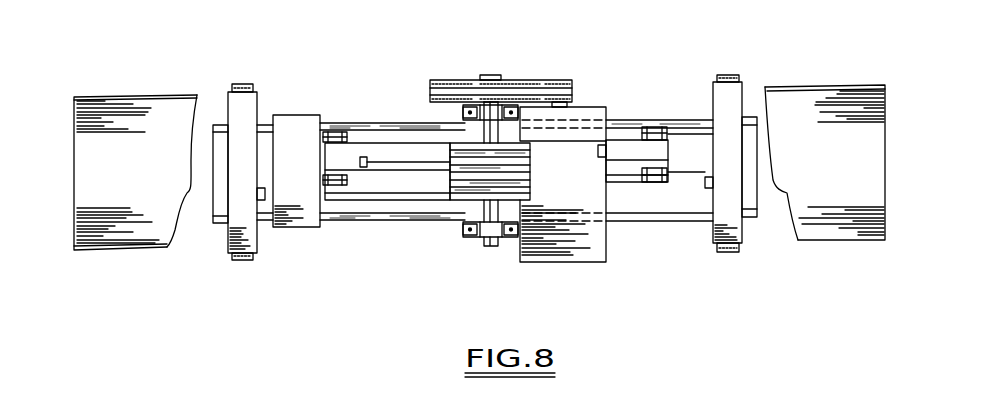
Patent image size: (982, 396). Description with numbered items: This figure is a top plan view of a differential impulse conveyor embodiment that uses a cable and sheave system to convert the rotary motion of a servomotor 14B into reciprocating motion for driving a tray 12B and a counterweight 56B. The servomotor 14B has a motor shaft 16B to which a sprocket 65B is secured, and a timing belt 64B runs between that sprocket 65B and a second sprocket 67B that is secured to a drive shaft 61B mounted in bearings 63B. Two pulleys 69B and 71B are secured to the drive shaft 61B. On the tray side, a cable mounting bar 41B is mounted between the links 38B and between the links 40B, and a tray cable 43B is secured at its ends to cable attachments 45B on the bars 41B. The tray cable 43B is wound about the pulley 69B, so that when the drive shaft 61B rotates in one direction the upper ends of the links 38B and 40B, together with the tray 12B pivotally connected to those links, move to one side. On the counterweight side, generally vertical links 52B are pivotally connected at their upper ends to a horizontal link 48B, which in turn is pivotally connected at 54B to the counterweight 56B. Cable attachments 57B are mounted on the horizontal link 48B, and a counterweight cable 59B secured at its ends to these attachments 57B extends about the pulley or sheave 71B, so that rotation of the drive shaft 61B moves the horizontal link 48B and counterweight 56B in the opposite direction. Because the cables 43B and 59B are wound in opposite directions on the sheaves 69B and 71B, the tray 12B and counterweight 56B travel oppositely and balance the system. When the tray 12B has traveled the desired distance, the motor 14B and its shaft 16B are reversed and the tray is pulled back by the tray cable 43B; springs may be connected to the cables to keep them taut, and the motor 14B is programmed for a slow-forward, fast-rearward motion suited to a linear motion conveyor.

The tray 12B is at (838, 78).
The servomotor 14B is at (562, 260).
The motor shaft 16B is at (572, 105).
The links 38B is at (240, 83).
The links 40B is at (727, 75).
The cable mounting bar 41B is at (727, 115).
The tray cable 43B is at (320, 223).
The cable attachments 45B is at (257, 194).
The horizontal link 48B is at (347, 223).
The vertical links 52B is at (690, 131).
The pivot connection 54B is at (280, 133).
The counterweight 56B is at (282, 118).
The cable attachments 57B is at (366, 156).
The counterweight cable 59B is at (617, 150).
The drive shaft 61B is at (491, 247).
The bearings 63B is at (462, 113).
The timing belt 64B is at (528, 90).
The sprocket 65B is at (552, 80).
The sprocket 67B is at (498, 80).
The pulley 69B is at (465, 203).
The pulley or sheave 71B is at (532, 150).